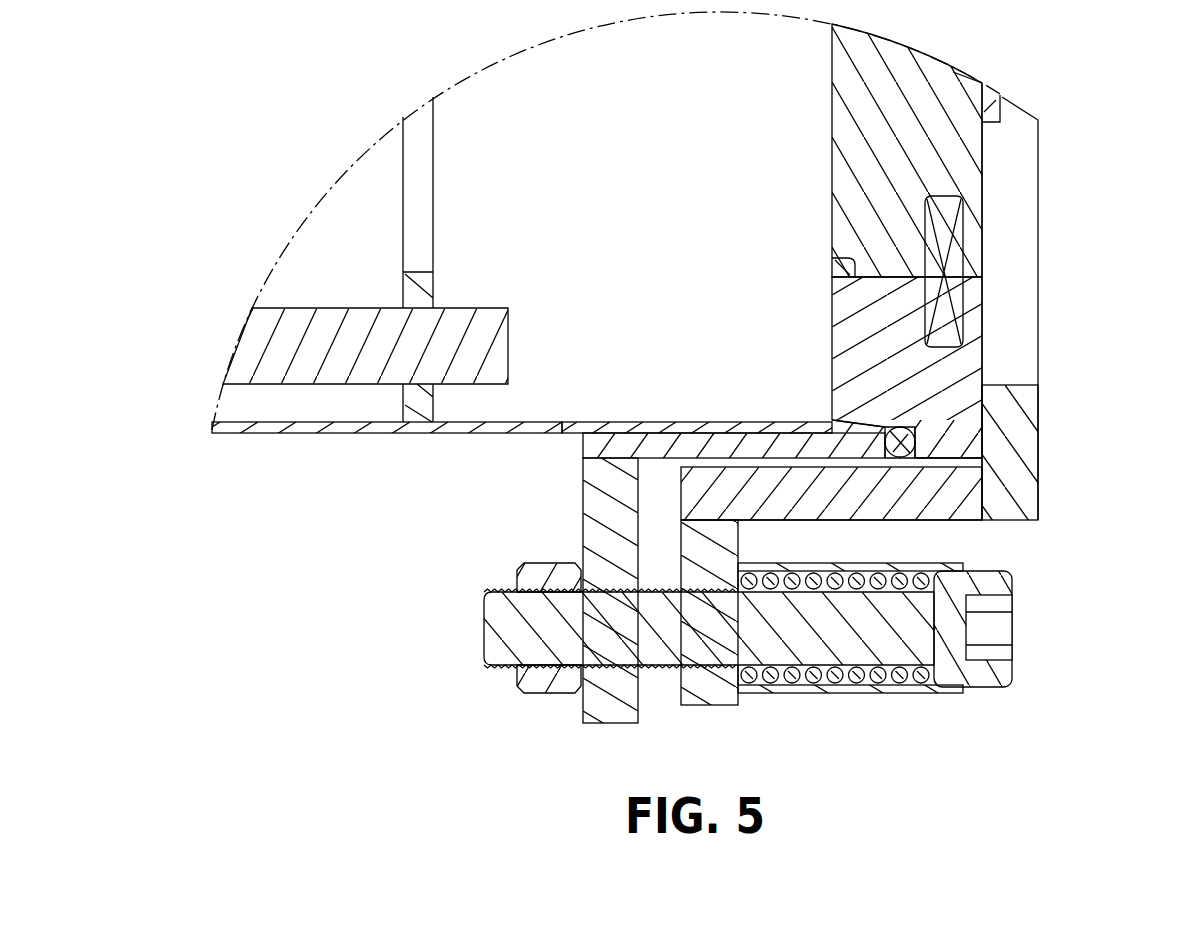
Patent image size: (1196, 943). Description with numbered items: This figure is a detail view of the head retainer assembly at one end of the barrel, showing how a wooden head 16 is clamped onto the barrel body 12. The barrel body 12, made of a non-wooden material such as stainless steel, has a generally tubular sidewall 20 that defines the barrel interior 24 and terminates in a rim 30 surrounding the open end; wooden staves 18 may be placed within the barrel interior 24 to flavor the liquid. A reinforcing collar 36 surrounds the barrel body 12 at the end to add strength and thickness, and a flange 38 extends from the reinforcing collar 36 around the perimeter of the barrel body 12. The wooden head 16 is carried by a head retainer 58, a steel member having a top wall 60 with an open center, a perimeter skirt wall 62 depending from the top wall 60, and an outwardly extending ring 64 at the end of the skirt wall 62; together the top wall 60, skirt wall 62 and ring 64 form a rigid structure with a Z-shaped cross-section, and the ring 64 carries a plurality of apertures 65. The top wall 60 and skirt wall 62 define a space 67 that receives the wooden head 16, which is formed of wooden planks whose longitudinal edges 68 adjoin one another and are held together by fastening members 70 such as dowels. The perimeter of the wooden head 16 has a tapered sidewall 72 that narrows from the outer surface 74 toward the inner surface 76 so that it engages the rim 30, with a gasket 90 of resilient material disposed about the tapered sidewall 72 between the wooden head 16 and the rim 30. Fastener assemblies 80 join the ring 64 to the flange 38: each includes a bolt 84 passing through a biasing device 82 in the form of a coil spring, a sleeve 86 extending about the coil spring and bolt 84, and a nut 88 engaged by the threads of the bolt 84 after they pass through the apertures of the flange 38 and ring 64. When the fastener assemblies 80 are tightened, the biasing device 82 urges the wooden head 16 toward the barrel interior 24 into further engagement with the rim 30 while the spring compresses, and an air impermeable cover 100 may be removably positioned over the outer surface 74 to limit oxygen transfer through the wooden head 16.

The barrel body 12 is at (395, 438).
The wooden head 16 is at (925, 90).
The wooden staves 18 is at (283, 355).
The sidewall 20 is at (315, 438).
The barrel interior 24 is at (592, 216).
The rim 30 is at (850, 478).
The reinforcing collar 36 is at (668, 437).
The flange 38 is at (598, 530).
The head retainer 58 is at (1098, 585).
The top wall 60 is at (1040, 428).
The skirt wall 62 is at (943, 521).
The ring 64 is at (708, 697).
The apertures 65 is at (672, 668).
The space 67 is at (928, 482).
The longitudinal edges 68 is at (845, 270).
The fastening members 70 is at (950, 252).
The tapered sidewall 72 is at (830, 420).
The outer surface 74 is at (985, 355).
The inner surface 76 is at (832, 320).
The fastener assemblies 80 is at (918, 701).
The biasing device 82 is at (806, 693).
The bolt 84 is at (972, 690).
The sleeve 86 is at (880, 694).
The nut 88 is at (547, 697).
The gasket 90 is at (905, 450).
The air impermeable cover 100 is at (1003, 124).